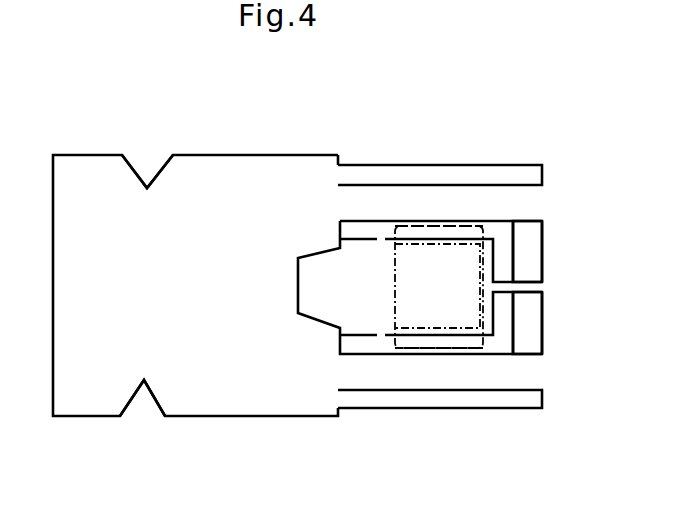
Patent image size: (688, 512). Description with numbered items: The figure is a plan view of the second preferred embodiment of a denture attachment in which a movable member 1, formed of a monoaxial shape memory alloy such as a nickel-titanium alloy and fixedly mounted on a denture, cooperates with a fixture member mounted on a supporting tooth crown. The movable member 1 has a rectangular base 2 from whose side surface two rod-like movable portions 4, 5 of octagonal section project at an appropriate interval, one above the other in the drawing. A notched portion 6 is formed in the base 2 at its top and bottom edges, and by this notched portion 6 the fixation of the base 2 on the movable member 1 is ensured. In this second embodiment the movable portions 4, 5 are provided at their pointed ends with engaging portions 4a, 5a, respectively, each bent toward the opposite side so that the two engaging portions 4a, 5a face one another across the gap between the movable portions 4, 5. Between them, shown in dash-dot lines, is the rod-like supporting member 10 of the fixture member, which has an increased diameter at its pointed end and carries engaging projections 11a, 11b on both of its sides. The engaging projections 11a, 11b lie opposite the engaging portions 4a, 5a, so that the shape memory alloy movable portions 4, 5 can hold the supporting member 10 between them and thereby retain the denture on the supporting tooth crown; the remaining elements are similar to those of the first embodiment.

The movable member 1 is at (322, 151).
The rectangular base 2 is at (230, 173).
The movable portion 4 is at (423, 177).
The engaging portion 4a is at (520, 257).
The movable portion 5 is at (448, 403).
The engaging portion 5a is at (517, 314).
The notched portion 6 is at (135, 165).
The supporting member 10 is at (472, 330).
The engaging projection 11a is at (498, 231).
The engaging projection 11b is at (500, 340).